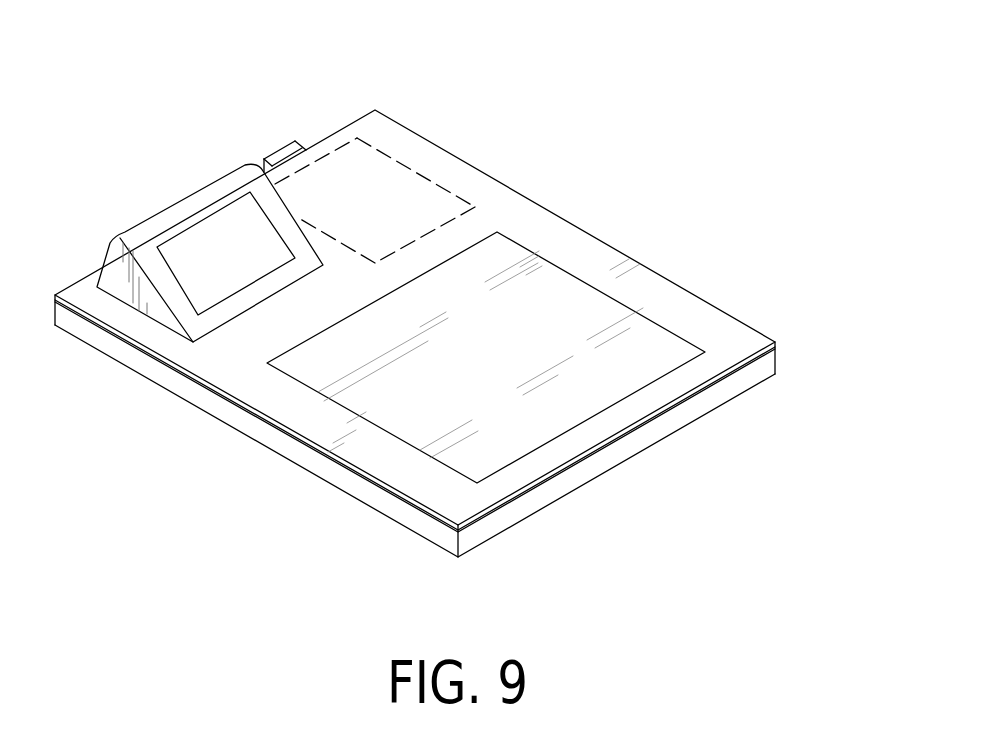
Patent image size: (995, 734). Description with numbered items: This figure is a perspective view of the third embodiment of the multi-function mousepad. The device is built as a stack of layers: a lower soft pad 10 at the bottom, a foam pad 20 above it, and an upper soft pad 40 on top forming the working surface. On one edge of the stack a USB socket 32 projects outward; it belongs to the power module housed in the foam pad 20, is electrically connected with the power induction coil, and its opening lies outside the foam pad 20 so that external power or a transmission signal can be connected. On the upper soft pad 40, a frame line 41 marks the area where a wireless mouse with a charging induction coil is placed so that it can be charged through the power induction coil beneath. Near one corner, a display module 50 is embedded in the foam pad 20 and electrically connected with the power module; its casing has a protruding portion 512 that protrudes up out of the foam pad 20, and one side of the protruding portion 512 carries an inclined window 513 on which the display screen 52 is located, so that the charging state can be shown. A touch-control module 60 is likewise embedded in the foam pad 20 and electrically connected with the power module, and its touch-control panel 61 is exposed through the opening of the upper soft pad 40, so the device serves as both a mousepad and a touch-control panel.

The lower soft pad 10 is at (631, 470).
The foam pad 20 is at (784, 343).
The USB socket 32 is at (275, 147).
The upper soft pad 40 is at (538, 197).
The frame line 41 is at (440, 182).
The display module 50 is at (224, 166).
The protruding portion 512 is at (155, 228).
The window 513 is at (197, 222).
The display screen 52 is at (203, 273).
The touch-control module 60 is at (597, 278).
The touch-control panel 61 is at (635, 352).